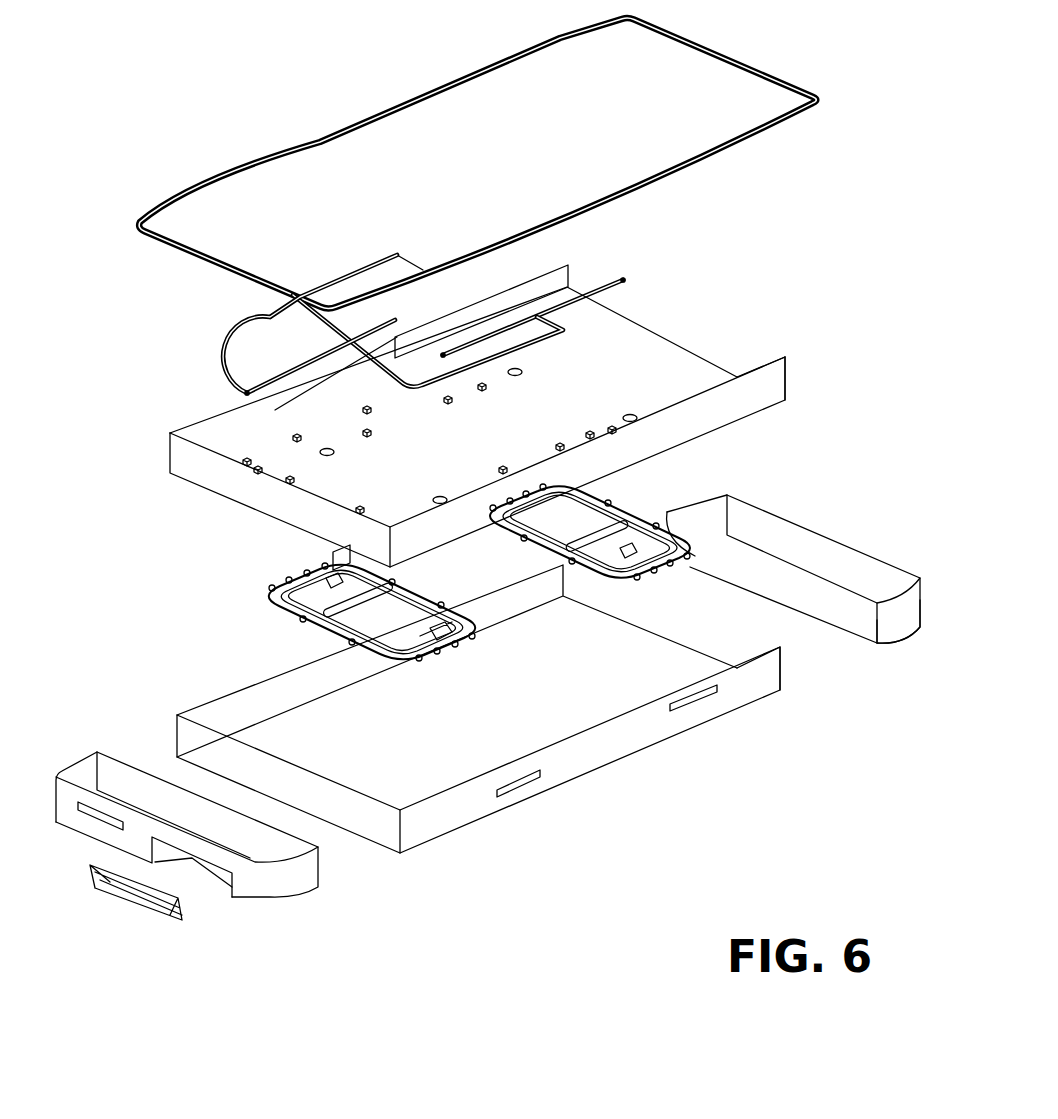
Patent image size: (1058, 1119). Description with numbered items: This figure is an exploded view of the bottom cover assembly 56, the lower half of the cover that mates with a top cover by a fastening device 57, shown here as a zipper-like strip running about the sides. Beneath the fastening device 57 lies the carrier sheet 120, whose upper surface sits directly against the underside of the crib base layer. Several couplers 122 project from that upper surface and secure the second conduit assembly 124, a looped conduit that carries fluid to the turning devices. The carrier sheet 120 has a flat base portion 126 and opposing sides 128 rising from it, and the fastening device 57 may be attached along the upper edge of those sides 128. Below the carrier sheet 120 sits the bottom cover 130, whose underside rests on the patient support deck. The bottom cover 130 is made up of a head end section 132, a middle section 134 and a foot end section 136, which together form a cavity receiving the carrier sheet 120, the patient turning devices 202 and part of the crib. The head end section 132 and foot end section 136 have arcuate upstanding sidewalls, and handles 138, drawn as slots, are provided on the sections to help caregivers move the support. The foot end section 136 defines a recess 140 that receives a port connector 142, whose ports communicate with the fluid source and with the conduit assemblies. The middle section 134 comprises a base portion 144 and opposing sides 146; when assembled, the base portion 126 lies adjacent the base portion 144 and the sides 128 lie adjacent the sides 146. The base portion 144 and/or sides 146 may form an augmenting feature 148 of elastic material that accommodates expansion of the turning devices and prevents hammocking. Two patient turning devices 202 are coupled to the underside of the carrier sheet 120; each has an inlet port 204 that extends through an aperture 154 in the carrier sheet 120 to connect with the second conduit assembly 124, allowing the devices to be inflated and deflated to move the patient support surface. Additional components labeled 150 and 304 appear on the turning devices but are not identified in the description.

The bottom cover assembly 56 is at (477, 159).
The fastening device 57 is at (376, 108).
The carrier sheet 120 is at (442, 391).
The coupler 122 is at (452, 402).
The second conduit assembly 124 is at (207, 352).
The base portion 126 is at (680, 372).
The opposing sides 128 is at (557, 288).
The bottom cover 130 is at (817, 578).
The head end section 132 is at (910, 637).
The middle section 134 is at (785, 667).
The foot end section 136 is at (187, 870).
The handles 138 is at (523, 785).
The recess 140 is at (218, 890).
The port connector 142 is at (90, 890).
The base portion 144 is at (532, 741).
The opposing sides 146 is at (223, 718).
The augmenting feature 148 is at (515, 836).
The gasket 150 is at (307, 629).
The aperture 154 is at (625, 446).
The patient turning device 202 is at (508, 627).
The inlet port 204 is at (447, 636).
The fastener 304 is at (330, 582).